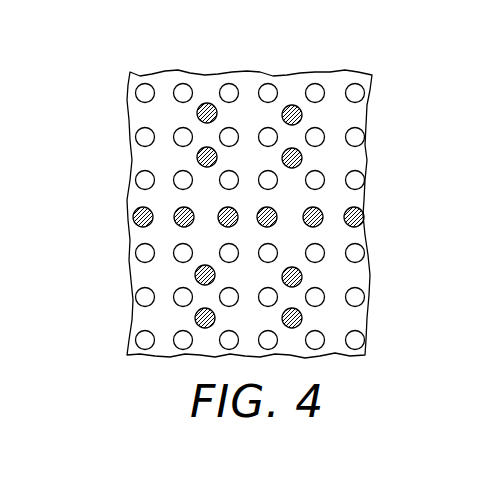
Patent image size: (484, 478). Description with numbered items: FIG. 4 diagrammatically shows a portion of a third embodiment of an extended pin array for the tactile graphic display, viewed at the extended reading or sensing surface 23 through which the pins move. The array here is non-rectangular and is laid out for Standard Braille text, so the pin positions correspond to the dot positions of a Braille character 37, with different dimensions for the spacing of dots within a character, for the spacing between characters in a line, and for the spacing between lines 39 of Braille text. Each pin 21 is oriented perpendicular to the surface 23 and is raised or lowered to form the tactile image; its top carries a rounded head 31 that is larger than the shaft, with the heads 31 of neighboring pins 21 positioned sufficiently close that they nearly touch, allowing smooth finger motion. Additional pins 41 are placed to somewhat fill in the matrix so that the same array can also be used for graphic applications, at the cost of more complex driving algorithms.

The reading surface 23 is at (128, 74).
The Braille character 37 is at (245, 118).
The lines of Braille text 39 is at (348, 163).
The pins 41 is at (210, 147).
The pins 21 is at (108, 297).
The rounded heads 31 is at (182, 253).